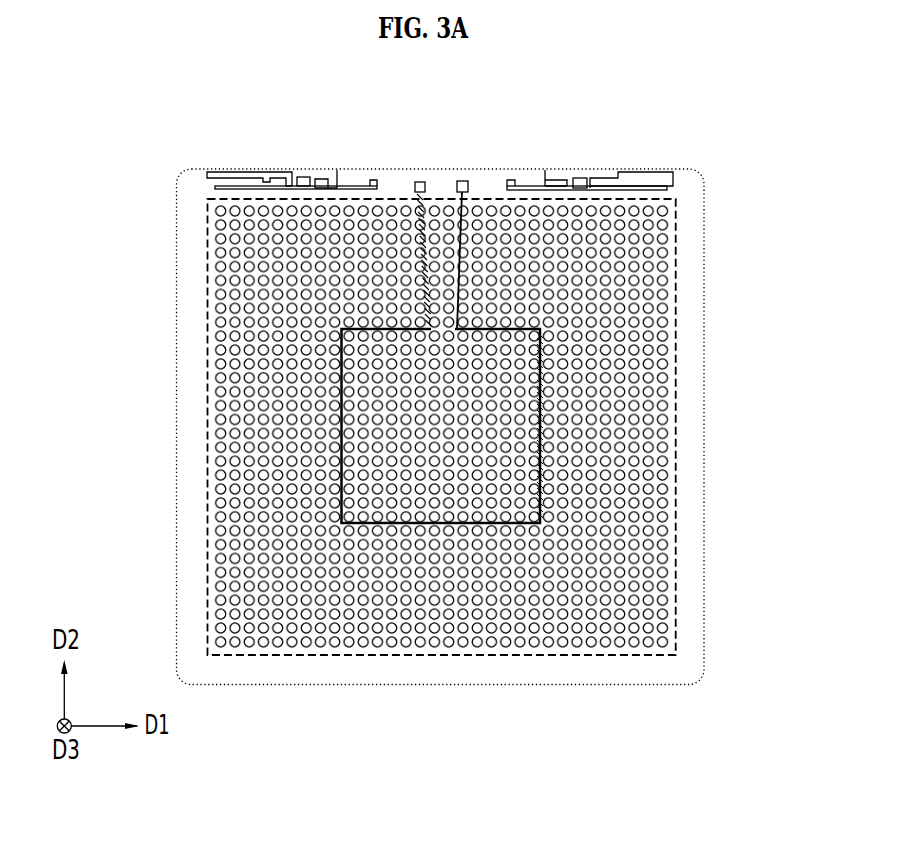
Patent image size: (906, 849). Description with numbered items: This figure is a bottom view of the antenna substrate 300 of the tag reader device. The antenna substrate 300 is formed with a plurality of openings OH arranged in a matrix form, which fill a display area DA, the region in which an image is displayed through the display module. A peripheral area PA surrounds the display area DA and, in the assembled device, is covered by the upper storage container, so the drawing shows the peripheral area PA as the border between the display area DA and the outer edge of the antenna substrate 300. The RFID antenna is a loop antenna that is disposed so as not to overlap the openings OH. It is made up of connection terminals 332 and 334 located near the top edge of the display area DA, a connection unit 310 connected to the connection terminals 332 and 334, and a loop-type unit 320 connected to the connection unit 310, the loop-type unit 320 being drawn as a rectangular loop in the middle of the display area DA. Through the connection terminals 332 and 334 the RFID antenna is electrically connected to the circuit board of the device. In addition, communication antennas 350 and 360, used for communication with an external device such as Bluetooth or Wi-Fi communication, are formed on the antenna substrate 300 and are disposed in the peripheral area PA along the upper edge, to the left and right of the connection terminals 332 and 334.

The antenna substrate 300 is at (672, 482).
The connection unit 310 is at (410, 248).
The loop-type unit 320 is at (333, 419).
The connection terminal 332 is at (417, 182).
The connection terminal 334 is at (462, 181).
The communication antenna 350 is at (292, 172).
The communication antenna 360 is at (588, 172).
The openings OH is at (662, 416).
The display area DA is at (609, 656).
The peripheral area PA is at (679, 682).